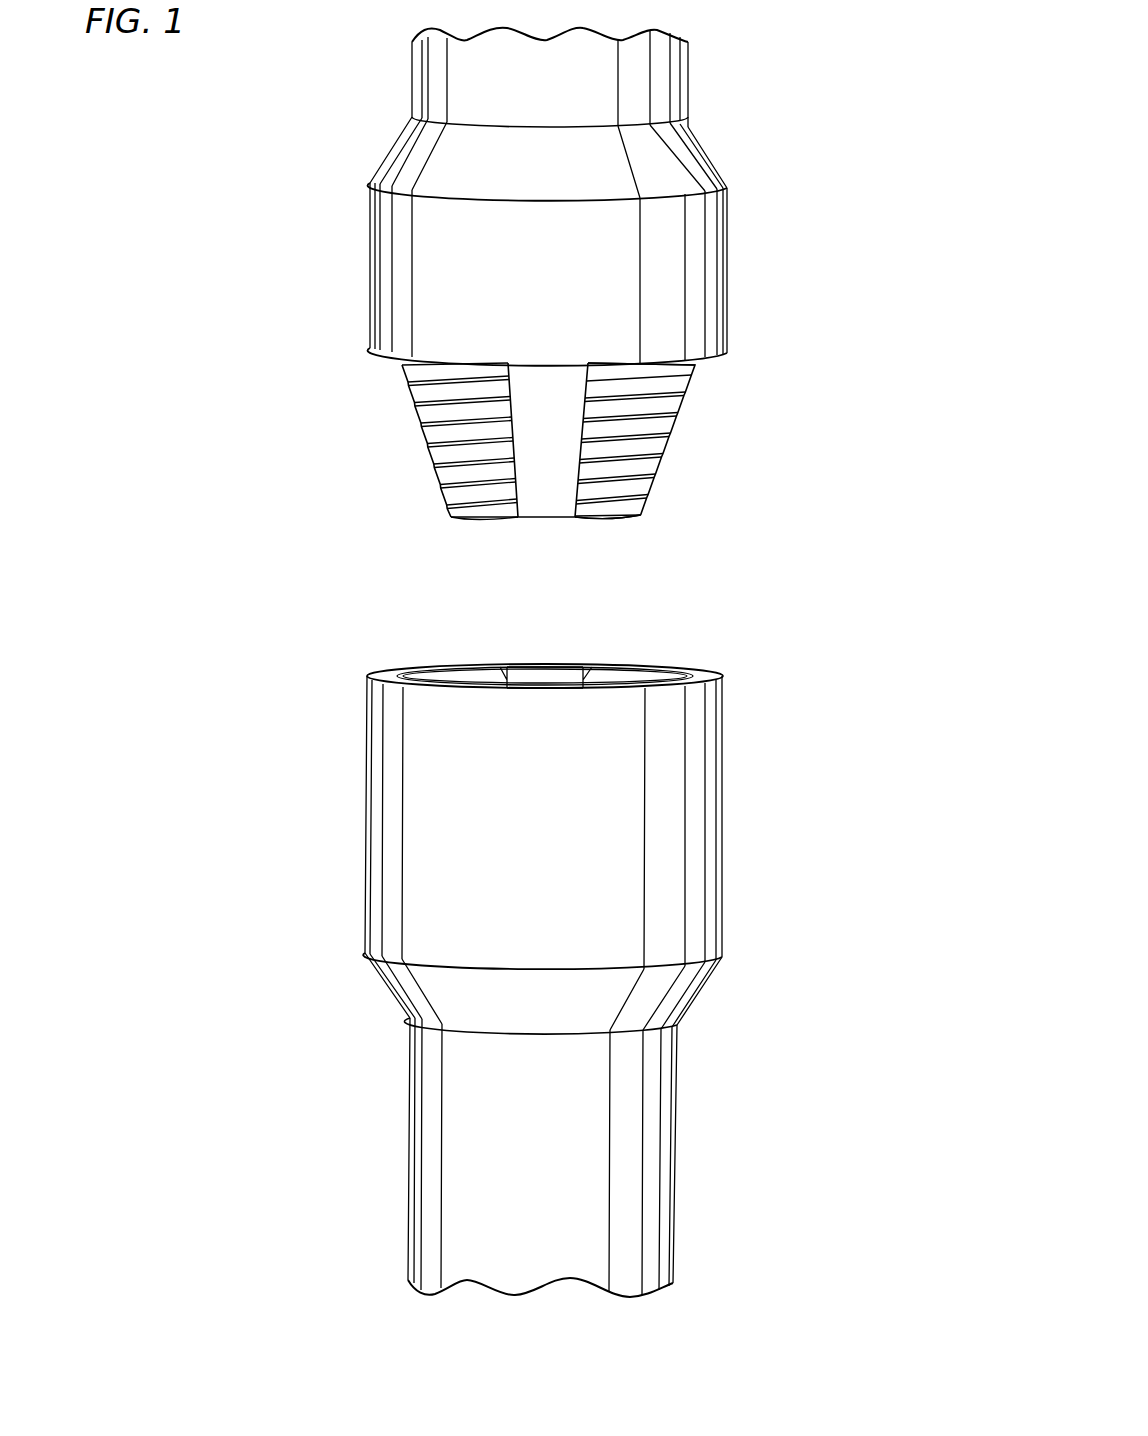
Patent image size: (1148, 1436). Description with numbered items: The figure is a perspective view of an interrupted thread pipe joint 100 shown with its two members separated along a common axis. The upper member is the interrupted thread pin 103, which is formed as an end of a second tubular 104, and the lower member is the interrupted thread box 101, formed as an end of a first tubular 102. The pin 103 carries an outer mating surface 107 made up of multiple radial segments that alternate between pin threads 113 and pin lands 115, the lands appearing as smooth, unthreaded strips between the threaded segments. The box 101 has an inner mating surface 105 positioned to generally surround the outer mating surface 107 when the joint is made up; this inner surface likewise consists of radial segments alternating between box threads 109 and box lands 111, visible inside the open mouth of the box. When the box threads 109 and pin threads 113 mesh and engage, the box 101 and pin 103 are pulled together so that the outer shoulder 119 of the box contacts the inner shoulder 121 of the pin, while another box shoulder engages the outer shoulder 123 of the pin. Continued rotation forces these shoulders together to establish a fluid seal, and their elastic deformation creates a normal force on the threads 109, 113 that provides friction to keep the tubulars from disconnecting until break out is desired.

The interrupted thread pipe joint 100 is at (328, 530).
The interrupted thread box 101 is at (515, 936).
The first tubular 102 is at (390, 1143).
The interrupted thread pin 103 is at (743, 254).
The second tubular 104 is at (738, 80).
The inner mating surface 105 is at (534, 802).
The outer mating surface 107 is at (552, 467).
The box threads 109 is at (430, 672).
The box lands 111 is at (522, 677).
The pin threads 113 is at (415, 420).
The pin lands 115 is at (545, 502).
The outer shoulder of box 119 is at (381, 672).
The inner shoulder of pin 121 is at (628, 517).
The outer shoulder of pin 123 is at (712, 364).